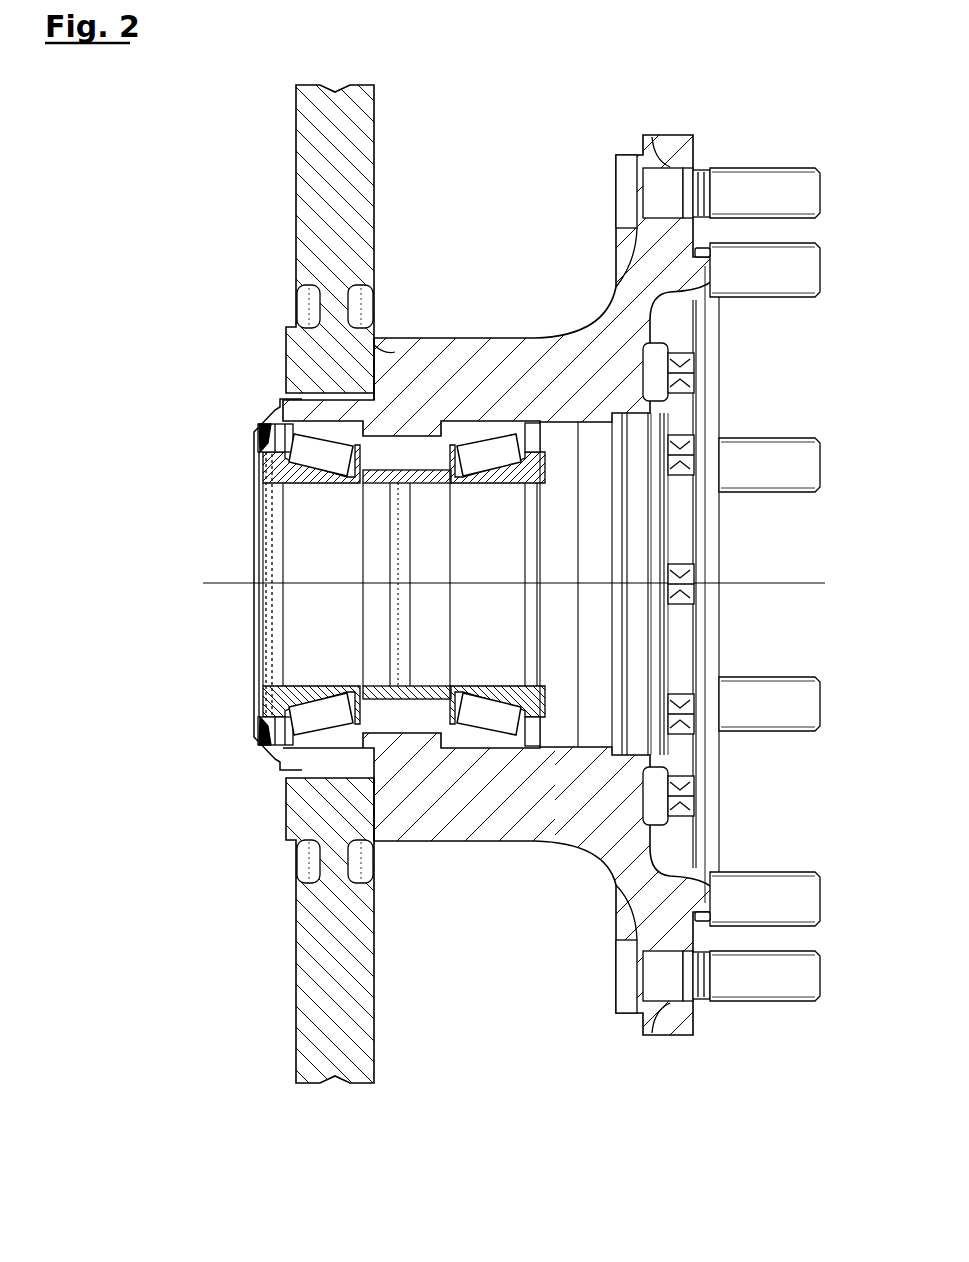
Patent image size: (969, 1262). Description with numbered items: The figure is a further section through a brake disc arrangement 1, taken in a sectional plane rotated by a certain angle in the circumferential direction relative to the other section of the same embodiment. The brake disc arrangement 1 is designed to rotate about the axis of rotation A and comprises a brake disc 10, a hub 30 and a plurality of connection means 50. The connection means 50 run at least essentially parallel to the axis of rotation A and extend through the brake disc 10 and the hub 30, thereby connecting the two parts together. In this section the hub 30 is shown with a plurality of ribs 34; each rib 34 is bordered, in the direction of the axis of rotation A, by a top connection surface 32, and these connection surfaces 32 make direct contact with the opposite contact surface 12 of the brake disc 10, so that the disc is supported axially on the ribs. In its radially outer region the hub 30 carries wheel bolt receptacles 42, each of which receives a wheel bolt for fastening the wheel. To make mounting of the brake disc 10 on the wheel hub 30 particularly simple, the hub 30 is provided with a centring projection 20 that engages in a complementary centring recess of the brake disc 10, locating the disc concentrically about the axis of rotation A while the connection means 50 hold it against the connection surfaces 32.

The brake disc arrangement 1 is at (502, 1012).
The axis of rotation A is at (227, 583).
The brake disc 10 is at (268, 205).
The contact surface 12 is at (375, 805).
The centring projection 20 is at (373, 840).
The hub 30 is at (569, 252).
The connection surface 32 is at (380, 352).
The rib 34 is at (503, 348).
The wheel bolt receptacle 42 is at (663, 170).
The connection means 50 is at (682, 375).